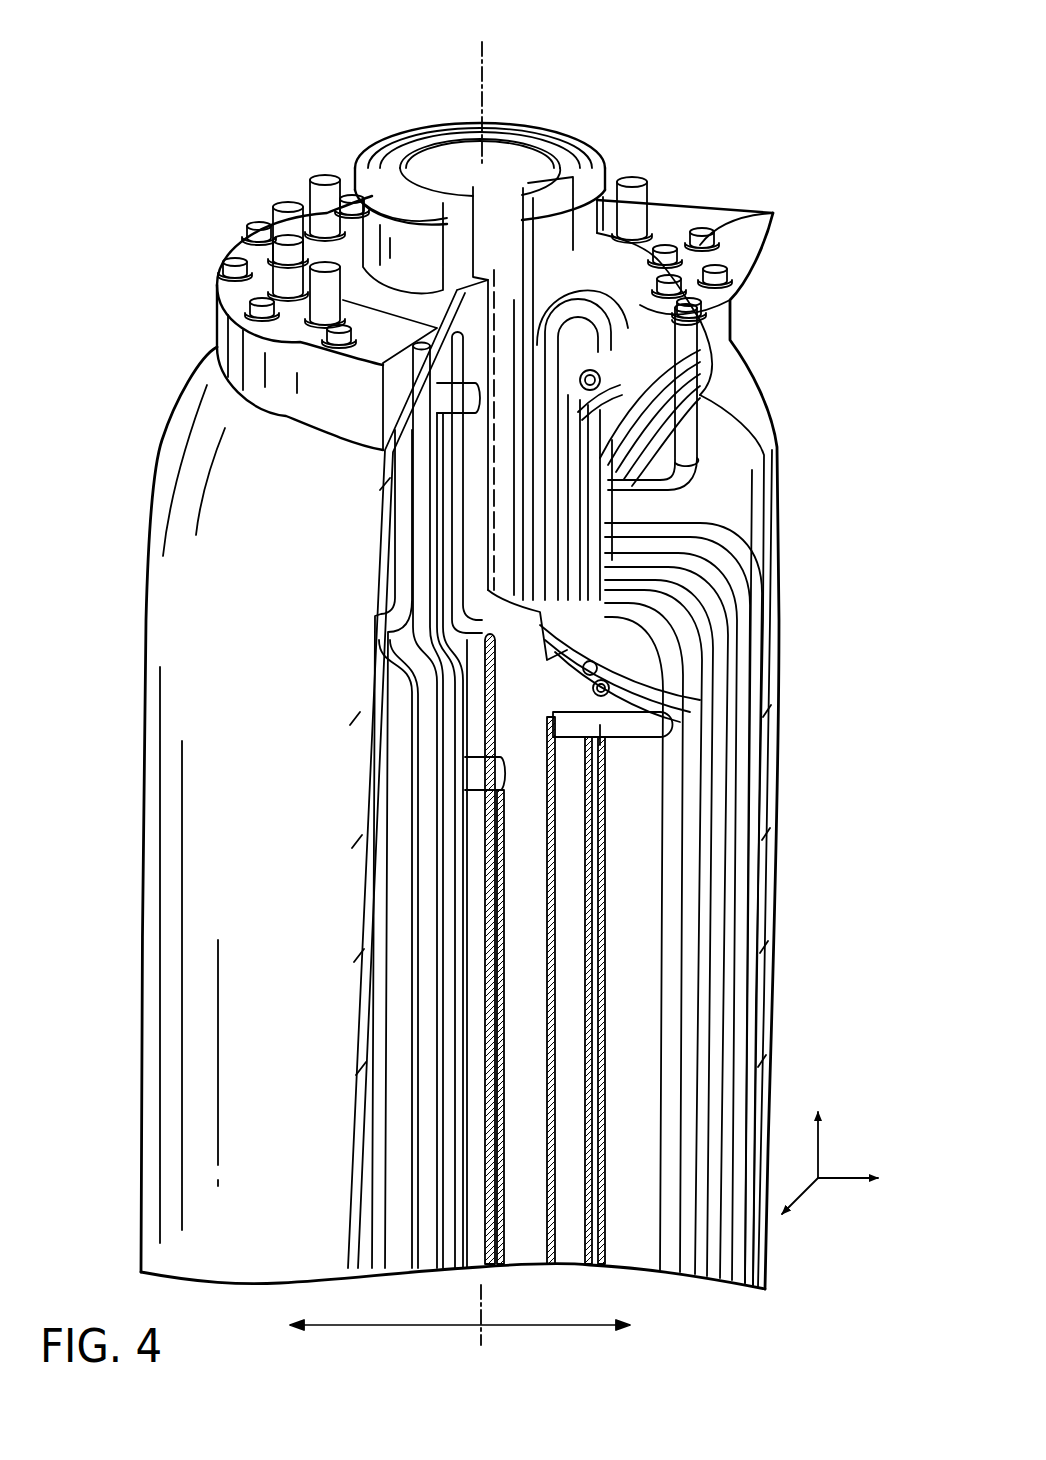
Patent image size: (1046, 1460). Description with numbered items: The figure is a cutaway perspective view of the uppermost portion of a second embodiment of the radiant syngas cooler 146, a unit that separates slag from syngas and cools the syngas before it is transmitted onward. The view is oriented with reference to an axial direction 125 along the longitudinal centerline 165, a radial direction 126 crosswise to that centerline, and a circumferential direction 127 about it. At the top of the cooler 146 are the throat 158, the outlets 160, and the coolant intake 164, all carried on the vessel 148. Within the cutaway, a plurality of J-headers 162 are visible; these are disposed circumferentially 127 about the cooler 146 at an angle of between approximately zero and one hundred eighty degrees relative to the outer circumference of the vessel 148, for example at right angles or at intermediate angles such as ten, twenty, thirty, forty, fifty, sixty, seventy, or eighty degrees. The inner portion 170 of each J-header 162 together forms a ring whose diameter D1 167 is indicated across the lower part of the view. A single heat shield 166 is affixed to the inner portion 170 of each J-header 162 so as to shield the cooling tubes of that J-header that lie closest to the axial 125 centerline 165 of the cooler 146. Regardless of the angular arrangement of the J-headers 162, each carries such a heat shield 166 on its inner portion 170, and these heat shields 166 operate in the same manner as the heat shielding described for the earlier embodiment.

The radiant syngas cooler 146 is at (253, 178).
The vessel 148 is at (778, 465).
The throat 158 is at (503, 183).
The outlets 160 is at (632, 182).
The J-headers 162 is at (663, 718).
The coolant intake 164 is at (705, 337).
The centerline 165 is at (483, 62).
The heat shield 166 is at (607, 965).
The diameter D1 167 is at (582, 1318).
The inner portion 170 is at (490, 778).
The axial direction 125 is at (825, 1133).
The radial direction 126 is at (850, 1183).
The circumferential direction 127 is at (800, 1197).